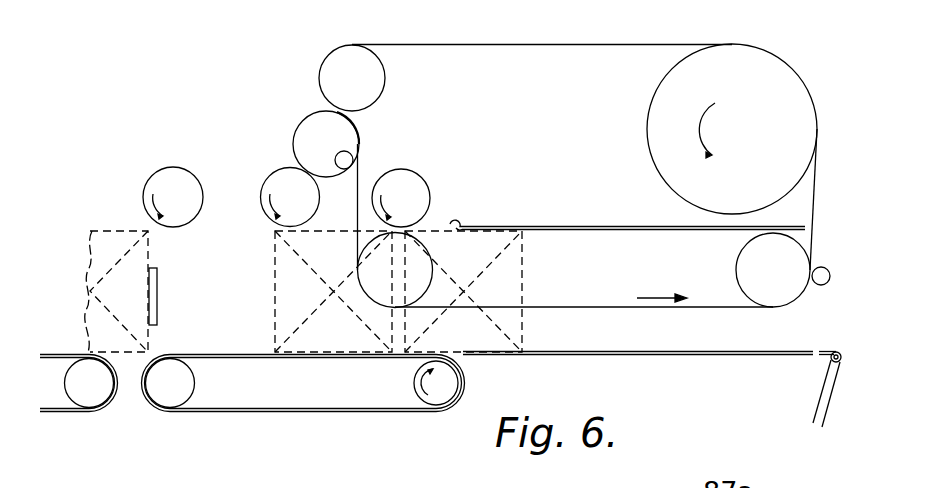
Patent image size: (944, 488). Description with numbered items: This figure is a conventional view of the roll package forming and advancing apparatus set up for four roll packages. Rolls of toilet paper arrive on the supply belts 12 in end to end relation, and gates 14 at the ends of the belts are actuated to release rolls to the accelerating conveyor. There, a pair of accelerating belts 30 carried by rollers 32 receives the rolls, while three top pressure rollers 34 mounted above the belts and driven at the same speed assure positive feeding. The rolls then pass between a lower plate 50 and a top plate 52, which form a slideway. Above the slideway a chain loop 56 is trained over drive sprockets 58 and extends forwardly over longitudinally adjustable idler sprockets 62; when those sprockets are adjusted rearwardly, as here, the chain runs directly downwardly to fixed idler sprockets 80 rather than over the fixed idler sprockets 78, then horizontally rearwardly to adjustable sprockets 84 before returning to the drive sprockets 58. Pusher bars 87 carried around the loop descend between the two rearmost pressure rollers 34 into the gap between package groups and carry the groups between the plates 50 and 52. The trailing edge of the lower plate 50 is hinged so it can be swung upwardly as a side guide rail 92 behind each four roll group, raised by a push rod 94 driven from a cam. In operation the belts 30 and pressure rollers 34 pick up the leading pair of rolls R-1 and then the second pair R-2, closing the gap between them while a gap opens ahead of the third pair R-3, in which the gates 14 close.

The belts 12 is at (62, 413).
The gates 14 is at (157, 305).
The accelerating belts 30 is at (302, 356).
The rollers 32 is at (413, 383).
The pressure rollers 34 is at (267, 177).
The lower plate 50 is at (685, 357).
The top plate 52 is at (585, 227).
The chain loop 56 is at (622, 44).
The drive sprockets 58 is at (662, 131).
The idler sprockets 62 is at (385, 78).
The fixed idler sprockets 78 is at (293, 143).
The idler sprockets 80 is at (431, 273).
The adjustable sprockets 84 is at (737, 269).
The pusher bars 87 is at (338, 155).
The side guide rail 92 is at (823, 352).
The push rod 94 is at (820, 397).
The leading pair of paper rolls R-1 is at (522, 280).
The second pair of rolls R-2 is at (274, 320).
The third pair of rolls R-3 is at (122, 230).